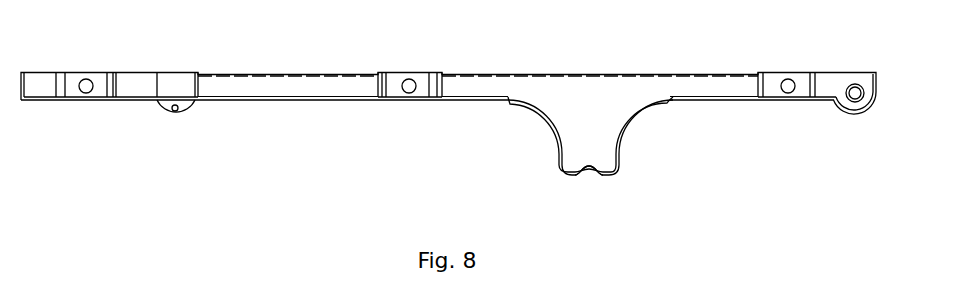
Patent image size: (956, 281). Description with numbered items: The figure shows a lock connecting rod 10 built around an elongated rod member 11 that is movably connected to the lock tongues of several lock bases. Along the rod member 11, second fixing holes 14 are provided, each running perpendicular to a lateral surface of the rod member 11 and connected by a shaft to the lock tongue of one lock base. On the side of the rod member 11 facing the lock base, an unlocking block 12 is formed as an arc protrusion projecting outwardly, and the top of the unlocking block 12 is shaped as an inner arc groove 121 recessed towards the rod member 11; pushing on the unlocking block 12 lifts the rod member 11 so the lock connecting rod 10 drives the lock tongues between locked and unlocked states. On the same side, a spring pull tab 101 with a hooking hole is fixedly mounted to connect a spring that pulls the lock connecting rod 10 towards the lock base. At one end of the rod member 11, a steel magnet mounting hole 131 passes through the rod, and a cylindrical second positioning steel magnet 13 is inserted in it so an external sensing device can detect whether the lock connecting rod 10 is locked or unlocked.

The lock connecting rod 10 is at (285, 73).
The rod member 11 is at (474, 90).
The unlocking block 12 is at (636, 120).
The inner arc groove 121 is at (588, 178).
The second positioning steel magnet 13 is at (852, 112).
The steel magnet mounting hole 131 is at (855, 84).
The second fixing hole 14 is at (86, 78).
The spring pull tab 101 is at (178, 115).